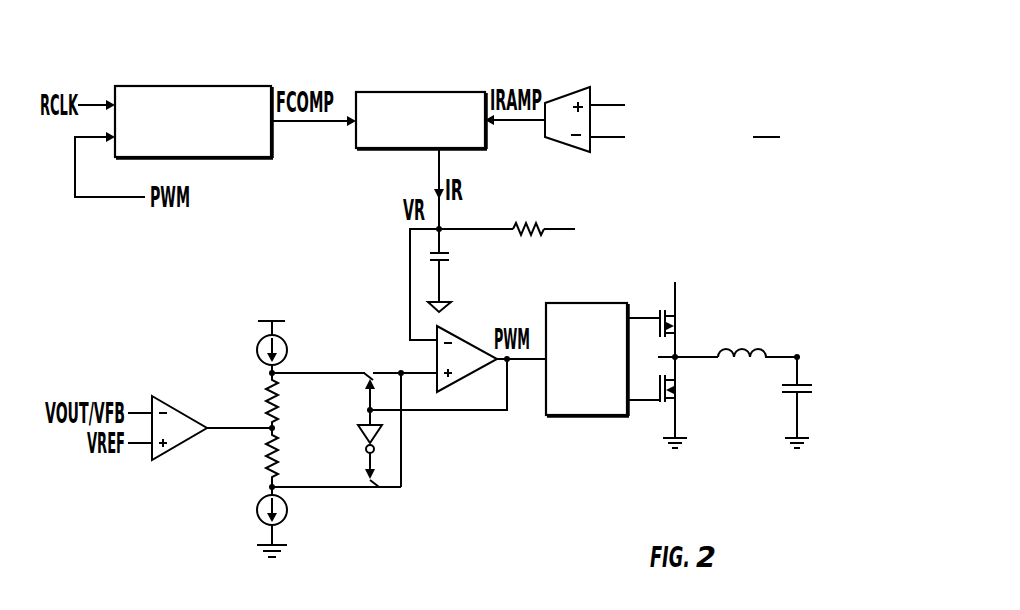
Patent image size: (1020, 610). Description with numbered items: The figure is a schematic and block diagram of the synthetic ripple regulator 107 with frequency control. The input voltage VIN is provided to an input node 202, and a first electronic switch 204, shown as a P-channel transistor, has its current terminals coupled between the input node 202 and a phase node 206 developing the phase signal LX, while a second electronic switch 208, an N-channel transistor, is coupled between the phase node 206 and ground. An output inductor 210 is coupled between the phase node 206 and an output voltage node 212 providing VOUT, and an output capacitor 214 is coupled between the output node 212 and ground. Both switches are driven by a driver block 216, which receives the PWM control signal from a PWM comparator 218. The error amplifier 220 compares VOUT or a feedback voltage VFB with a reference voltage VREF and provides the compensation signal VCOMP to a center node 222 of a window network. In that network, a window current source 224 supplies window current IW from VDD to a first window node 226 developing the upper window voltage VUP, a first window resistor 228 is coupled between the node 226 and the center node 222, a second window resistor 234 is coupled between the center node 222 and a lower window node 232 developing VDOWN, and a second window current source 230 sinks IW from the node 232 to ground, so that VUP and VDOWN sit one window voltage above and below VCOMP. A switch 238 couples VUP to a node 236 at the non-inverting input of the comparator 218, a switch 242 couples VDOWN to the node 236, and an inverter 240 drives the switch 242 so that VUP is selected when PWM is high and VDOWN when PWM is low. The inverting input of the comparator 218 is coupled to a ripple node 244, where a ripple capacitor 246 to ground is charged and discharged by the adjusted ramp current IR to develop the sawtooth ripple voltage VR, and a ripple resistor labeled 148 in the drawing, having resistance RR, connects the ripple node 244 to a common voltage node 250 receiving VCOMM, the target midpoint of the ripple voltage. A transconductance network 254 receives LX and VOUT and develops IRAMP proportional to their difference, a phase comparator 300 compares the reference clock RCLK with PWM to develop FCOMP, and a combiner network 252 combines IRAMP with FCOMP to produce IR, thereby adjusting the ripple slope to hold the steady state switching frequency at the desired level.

The synthetic ripple regulator 107 is at (766, 125).
The phase comparator 300 is at (248, 86).
The combiner network 252 is at (467, 92).
The transconductance network 254 is at (583, 88).
The common voltage node 250 is at (573, 229).
The ramp resistor RR 148 is at (543, 233).
The ripple node 244 is at (410, 239).
The ripple capacitor 246 is at (447, 258).
The PWM comparator 218 is at (467, 338).
The driver block 216 is at (591, 416).
The phase node 206 is at (673, 348).
The input node 202 is at (675, 293).
The first electronic switch 204 is at (683, 330).
The second electronic switch 208 is at (683, 401).
The output inductor 210 is at (753, 340).
The output voltage node 212 is at (802, 358).
The output capacitor 214 is at (805, 394).
The error amplifier 220 is at (179, 446).
The center node 222 is at (283, 428).
The window current source 224 is at (262, 338).
The first window node 226 is at (268, 373).
The first window resistor 228 is at (266, 400).
The second window resistor 234 is at (266, 458).
The lower window node 232 is at (268, 487).
The window current source 230 is at (285, 518).
The controlled SPST switch 238 is at (369, 372).
The inverter 240 is at (366, 447).
The node 236 is at (401, 372).
The controlled SPST switch 242 is at (380, 489).